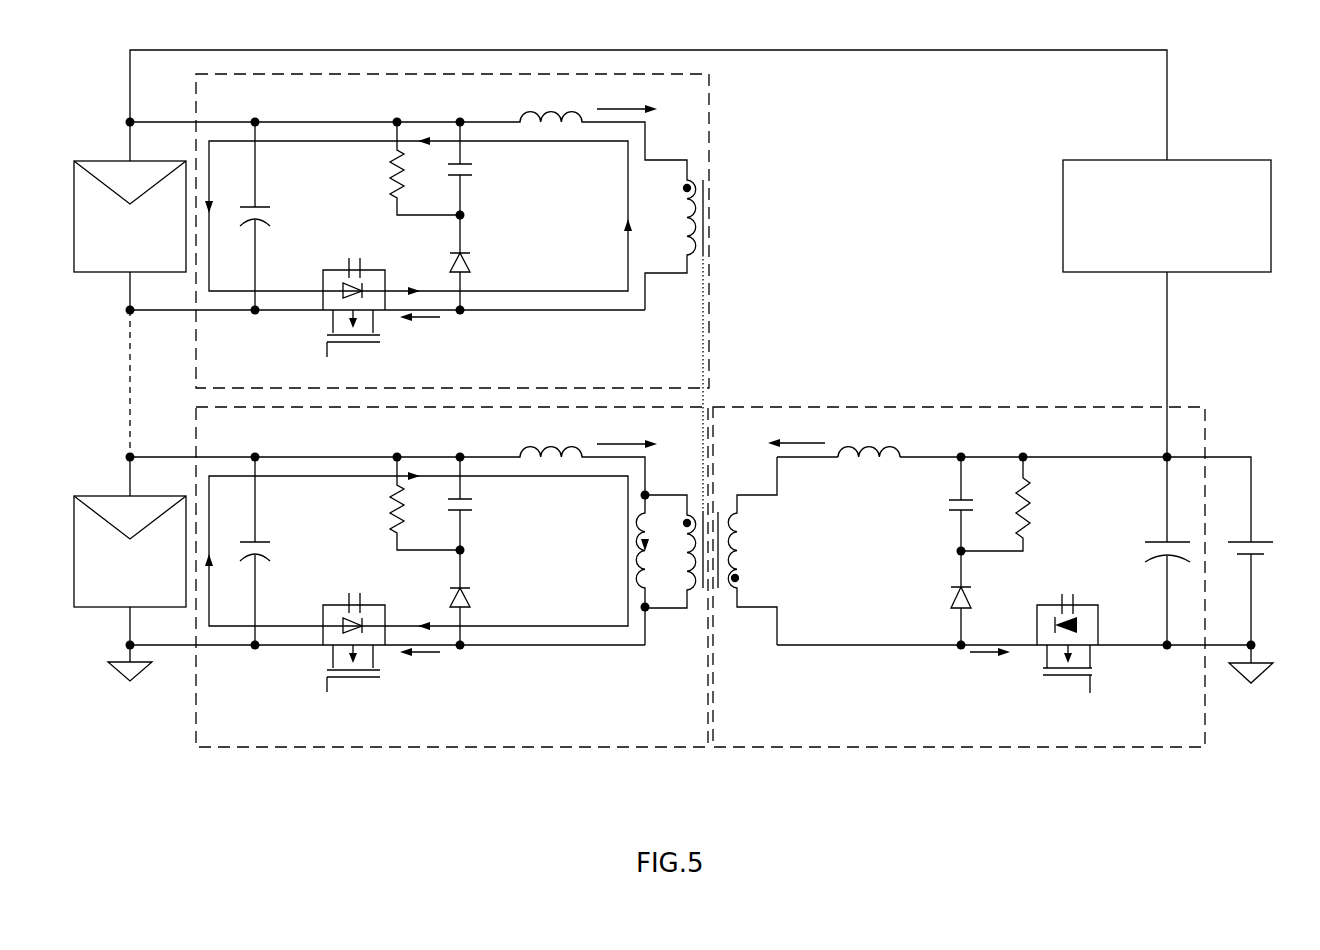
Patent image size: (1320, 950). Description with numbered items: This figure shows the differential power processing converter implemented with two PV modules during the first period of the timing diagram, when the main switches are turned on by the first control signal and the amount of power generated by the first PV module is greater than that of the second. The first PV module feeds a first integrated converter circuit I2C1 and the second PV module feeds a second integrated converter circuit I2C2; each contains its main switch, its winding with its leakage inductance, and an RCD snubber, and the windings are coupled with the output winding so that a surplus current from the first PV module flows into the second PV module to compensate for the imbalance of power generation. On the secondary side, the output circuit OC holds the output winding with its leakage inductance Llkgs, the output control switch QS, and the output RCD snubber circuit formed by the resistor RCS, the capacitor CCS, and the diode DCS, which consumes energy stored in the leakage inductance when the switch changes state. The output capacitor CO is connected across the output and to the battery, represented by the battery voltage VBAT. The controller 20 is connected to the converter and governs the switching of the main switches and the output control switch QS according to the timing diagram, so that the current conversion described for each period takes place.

The controller 20 is at (1237, 160).
The first integrated converter circuit I2C1 is at (430, 747).
The second integrated converter circuit I2C2 is at (400, 74).
The output circuit OC is at (959, 610).
The leakage inductance of the output winding Llkgs is at (869, 470).
The output snubber capacitor CCS is at (978, 504).
The output snubber diode DCS is at (939, 598).
The output snubber resistor RCS is at (1018, 504).
The output control switch QS is at (1067, 653).
The output capacitor CO is at (1149, 551).
The battery voltage VBAT is at (1243, 570).